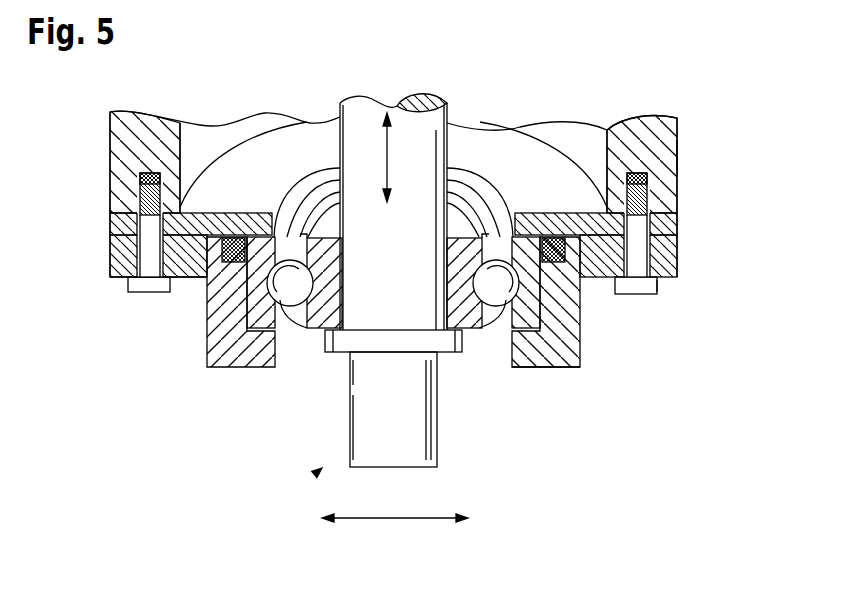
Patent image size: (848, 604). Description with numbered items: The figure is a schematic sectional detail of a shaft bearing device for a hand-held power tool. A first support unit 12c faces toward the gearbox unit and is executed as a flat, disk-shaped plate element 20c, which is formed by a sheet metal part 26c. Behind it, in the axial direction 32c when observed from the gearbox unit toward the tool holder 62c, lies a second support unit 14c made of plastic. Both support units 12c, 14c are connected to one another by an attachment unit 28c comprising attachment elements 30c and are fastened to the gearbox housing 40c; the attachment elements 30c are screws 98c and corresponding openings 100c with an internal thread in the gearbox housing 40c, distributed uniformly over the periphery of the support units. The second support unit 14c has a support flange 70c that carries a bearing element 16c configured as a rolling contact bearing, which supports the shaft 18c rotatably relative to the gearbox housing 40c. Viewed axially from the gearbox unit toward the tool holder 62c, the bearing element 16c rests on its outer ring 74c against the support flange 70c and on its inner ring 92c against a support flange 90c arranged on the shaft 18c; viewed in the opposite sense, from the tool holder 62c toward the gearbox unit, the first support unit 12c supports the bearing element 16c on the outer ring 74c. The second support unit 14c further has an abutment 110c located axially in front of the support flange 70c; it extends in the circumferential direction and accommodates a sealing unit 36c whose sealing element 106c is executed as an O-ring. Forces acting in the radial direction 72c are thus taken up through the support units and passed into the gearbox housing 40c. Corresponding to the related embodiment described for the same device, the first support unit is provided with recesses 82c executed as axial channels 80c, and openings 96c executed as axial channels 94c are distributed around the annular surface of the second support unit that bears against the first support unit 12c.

The first support unit 12c is at (680, 213).
The second support unit 14c is at (680, 255).
The bearing element 16c is at (533, 362).
The shaft 18c is at (416, 125).
The plate element 20c is at (583, 124).
The sheet metal part 26c is at (678, 226).
The attachment unit 28c is at (118, 201).
The attachment elements 30c is at (150, 174).
The axial direction 32c is at (375, 150).
The sealing unit 36c is at (200, 277).
The gearbox housing 40c is at (643, 120).
The tool holder 62c is at (316, 473).
The support flange 70c is at (540, 353).
The radial movement direction 72c is at (393, 520).
The outer ring 74c is at (527, 212).
The plate 80c is at (128, 230).
The membrane 82c is at (183, 207).
The support flange 90c is at (440, 345).
The inner ring 92c is at (457, 282).
The lower plate 94c is at (110, 262).
The bottom surface 96c is at (112, 278).
The screws 98c is at (640, 290).
The openings 100c is at (677, 153).
The sealing element 106c is at (218, 262).
The abutment 110c is at (560, 287).